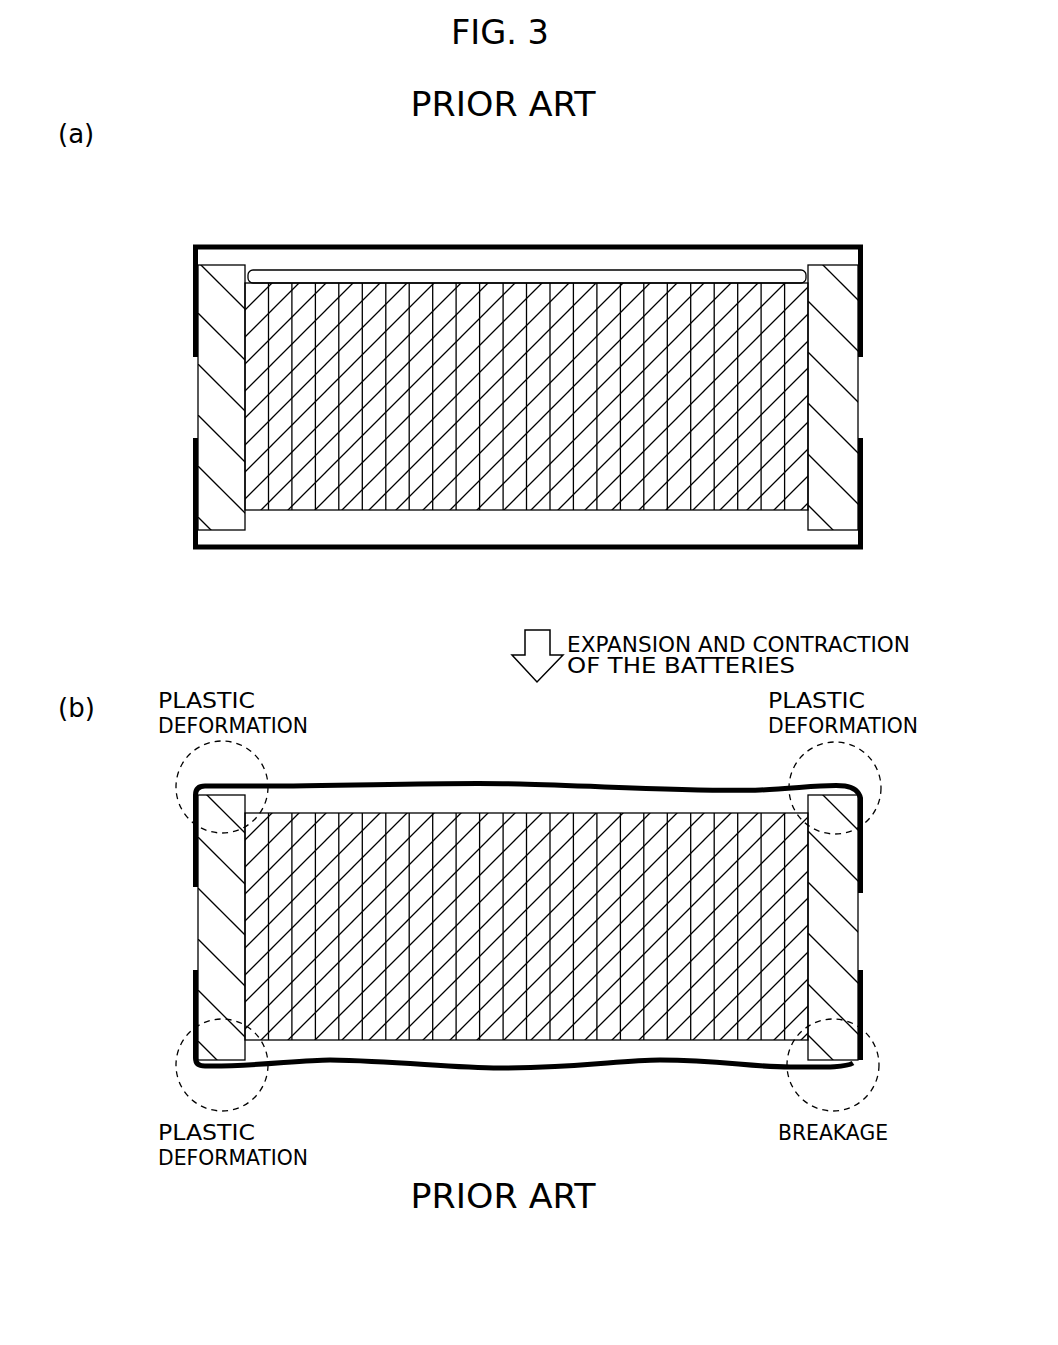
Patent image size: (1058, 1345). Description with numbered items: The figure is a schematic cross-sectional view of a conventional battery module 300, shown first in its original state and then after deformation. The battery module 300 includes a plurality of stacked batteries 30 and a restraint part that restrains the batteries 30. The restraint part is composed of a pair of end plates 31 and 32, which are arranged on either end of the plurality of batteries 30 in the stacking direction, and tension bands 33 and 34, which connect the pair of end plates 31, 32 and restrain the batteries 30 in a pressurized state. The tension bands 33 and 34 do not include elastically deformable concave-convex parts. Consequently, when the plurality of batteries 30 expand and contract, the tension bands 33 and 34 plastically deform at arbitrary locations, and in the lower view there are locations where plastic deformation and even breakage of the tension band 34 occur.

The conventional battery module 300 is at (178, 214).
The batteries 30 is at (530, 248).
The end plate 31 is at (213, 400).
The end plate 32 is at (835, 408).
The tension band 33 is at (527, 270).
The tension band 34 is at (548, 548).